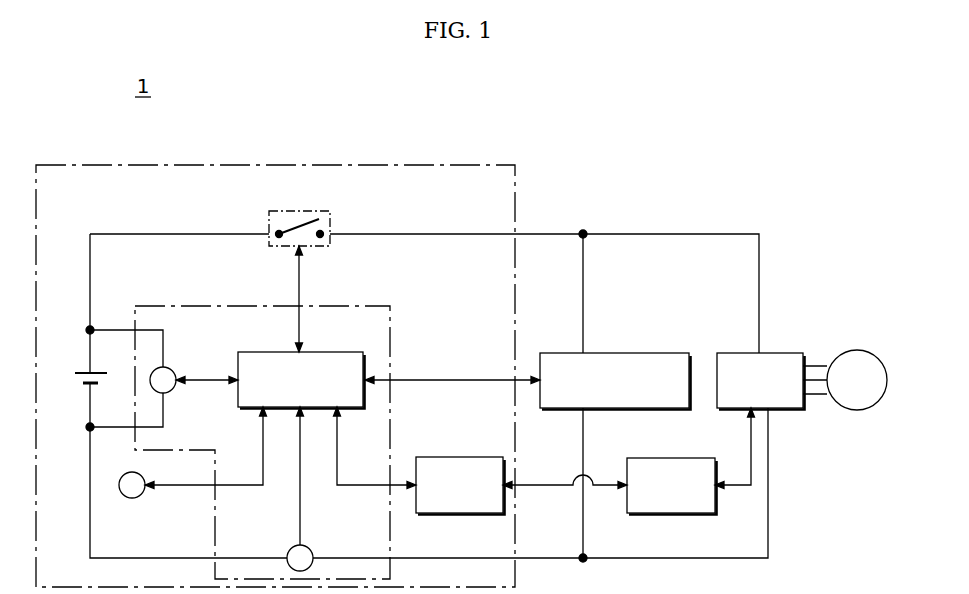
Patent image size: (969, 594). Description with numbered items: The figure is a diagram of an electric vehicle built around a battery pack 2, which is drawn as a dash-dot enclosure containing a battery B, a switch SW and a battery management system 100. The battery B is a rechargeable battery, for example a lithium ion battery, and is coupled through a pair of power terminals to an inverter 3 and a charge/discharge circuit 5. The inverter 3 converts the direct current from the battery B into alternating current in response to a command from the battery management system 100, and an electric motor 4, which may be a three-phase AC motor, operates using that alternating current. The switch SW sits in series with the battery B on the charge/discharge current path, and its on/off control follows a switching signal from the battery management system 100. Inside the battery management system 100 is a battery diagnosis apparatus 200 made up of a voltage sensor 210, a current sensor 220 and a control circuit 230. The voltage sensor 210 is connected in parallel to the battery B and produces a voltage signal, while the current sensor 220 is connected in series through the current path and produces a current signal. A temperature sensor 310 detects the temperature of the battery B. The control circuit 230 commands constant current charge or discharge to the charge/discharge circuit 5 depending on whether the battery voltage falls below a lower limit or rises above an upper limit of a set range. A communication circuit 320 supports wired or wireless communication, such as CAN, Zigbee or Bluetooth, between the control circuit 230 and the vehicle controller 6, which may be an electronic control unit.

The battery pack 2 is at (459, 165).
The inverter 3 is at (787, 353).
The electric motor 4 is at (857, 350).
The charge/discharge circuit 5 is at (672, 353).
The vehicle controller 6 is at (697, 458).
The battery B is at (74, 373).
The switch SW is at (300, 211).
The battery management system 100 is at (189, 299).
The battery diagnosis apparatus 200 is at (357, 306).
The voltage sensor 210 is at (172, 371).
The current sensor 220 is at (308, 546).
The control circuit 230 is at (340, 352).
The temperature sensor 310 is at (131, 498).
The communication circuit 320 is at (478, 457).